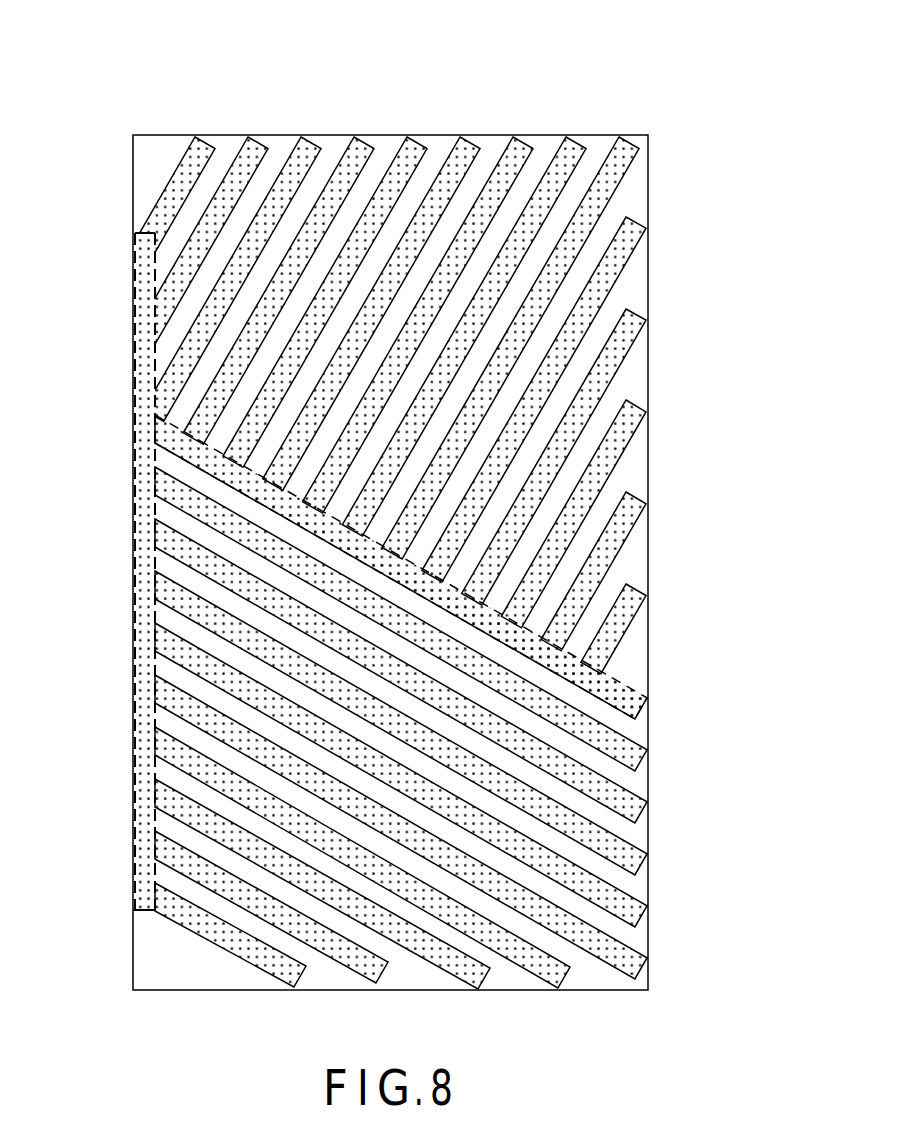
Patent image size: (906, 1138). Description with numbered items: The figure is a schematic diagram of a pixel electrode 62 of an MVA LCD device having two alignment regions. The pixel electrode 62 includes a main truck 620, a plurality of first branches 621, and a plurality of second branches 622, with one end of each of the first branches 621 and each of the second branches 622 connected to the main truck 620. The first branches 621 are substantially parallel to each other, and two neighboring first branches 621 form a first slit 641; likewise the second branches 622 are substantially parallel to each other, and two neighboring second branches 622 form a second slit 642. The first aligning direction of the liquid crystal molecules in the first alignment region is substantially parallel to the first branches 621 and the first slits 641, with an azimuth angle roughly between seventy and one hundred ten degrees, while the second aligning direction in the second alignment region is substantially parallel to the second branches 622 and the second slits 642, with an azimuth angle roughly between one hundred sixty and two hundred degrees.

The pixel electrode 62 is at (402, 495).
The main truck 620 is at (133, 441).
The first branches 621 is at (301, 160).
The second branches 622 is at (640, 745).
The first slit 641 is at (355, 357).
The second slit 642 is at (456, 702).